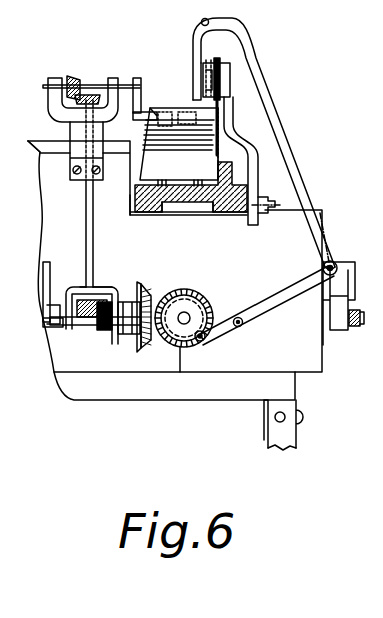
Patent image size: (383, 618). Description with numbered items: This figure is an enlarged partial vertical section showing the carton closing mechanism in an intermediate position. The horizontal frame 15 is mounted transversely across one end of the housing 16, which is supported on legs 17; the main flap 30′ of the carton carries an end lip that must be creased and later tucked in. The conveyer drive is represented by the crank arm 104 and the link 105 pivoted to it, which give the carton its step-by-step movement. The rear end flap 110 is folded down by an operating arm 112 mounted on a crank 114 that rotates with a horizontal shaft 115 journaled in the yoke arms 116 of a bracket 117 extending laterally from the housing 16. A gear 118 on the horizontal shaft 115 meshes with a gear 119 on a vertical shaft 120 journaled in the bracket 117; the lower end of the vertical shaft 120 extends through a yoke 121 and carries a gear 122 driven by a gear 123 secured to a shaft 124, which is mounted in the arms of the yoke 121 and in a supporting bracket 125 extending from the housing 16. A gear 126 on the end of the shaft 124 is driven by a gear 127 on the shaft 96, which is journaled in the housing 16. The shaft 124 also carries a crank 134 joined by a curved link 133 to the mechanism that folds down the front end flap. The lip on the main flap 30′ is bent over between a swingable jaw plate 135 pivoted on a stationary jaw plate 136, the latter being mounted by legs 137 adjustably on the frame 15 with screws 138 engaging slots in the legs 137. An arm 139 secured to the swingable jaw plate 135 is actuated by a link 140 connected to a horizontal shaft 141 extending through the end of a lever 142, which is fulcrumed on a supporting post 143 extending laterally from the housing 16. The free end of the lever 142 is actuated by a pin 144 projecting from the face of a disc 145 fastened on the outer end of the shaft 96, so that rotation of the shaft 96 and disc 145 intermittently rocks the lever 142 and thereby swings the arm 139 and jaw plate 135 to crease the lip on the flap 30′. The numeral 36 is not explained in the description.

The horizontal frame 15 is at (213, 212).
The housing 16 is at (178, 270).
The legs 17 is at (268, 432).
The main flap 30′ is at (182, 126).
The frame 36 is at (20, 143).
The shaft 96 is at (190, 316).
The crank arm 104 is at (342, 322).
The link 105 is at (354, 330).
The rear end flap 110 is at (179, 147).
The operating arm 112 is at (142, 113).
The crank 114 is at (140, 92).
The horizontal shaft 115 is at (107, 80).
The yoke arms 116 is at (118, 80).
The bracket 117 is at (70, 130).
The gear 118 is at (72, 76).
The gear 119 is at (100, 93).
The vertical shaft 120 is at (93, 241).
The yoke 121 is at (100, 288).
The gear 122 is at (80, 333).
The gear 123 is at (105, 336).
The shaft 124 is at (88, 340).
The supporting bracket 125 is at (148, 350).
The gear 126 is at (143, 289).
The gear 127 is at (190, 297).
The curved link 133 is at (43, 285).
The crank 134 is at (55, 311).
The swingable jaw plate 135 is at (202, 97).
The stationary jaw plate 136 is at (219, 98).
The legs 137 is at (259, 158).
The screws 138 is at (276, 196).
The arm 139 is at (197, 38).
The link 140 is at (282, 118).
The horizontal shaft 141 is at (332, 262).
The lever 142 is at (299, 300).
The supporting post 143 is at (242, 326).
The pin 144 is at (205, 341).
The disc 145 is at (185, 367).